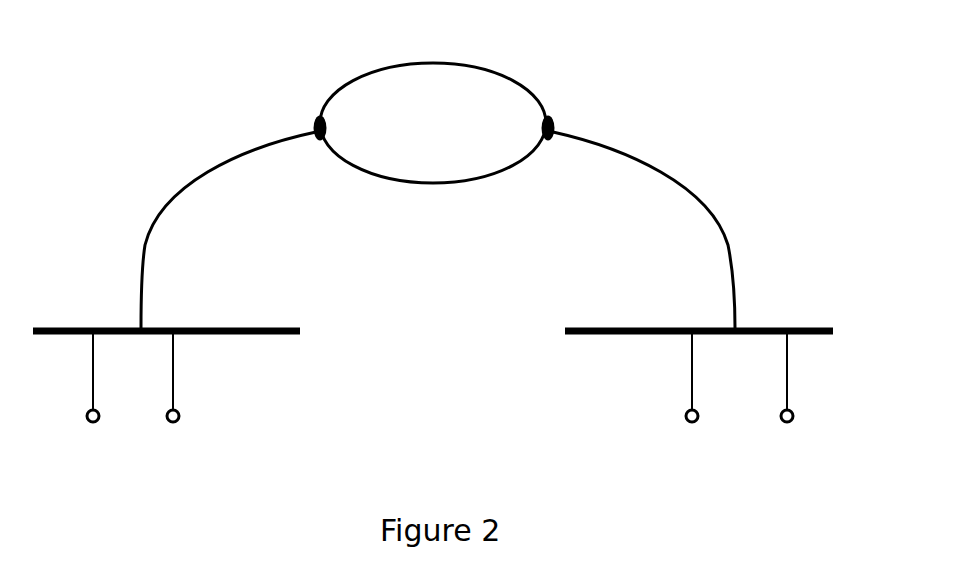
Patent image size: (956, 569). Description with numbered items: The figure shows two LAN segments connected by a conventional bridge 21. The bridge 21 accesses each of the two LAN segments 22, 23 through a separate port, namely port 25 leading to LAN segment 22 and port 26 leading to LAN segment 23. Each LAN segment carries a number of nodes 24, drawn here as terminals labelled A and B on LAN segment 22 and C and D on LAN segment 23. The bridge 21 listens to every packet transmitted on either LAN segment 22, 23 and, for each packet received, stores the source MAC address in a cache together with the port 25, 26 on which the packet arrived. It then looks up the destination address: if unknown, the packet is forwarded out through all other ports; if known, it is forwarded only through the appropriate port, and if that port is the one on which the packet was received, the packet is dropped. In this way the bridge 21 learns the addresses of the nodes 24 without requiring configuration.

The bridge 21 is at (524, 55).
The LAN segment 22 is at (281, 307).
The LAN segment 23 is at (570, 313).
The node 24 is at (192, 407).
The port 25 is at (302, 115).
The port 26 is at (560, 104).